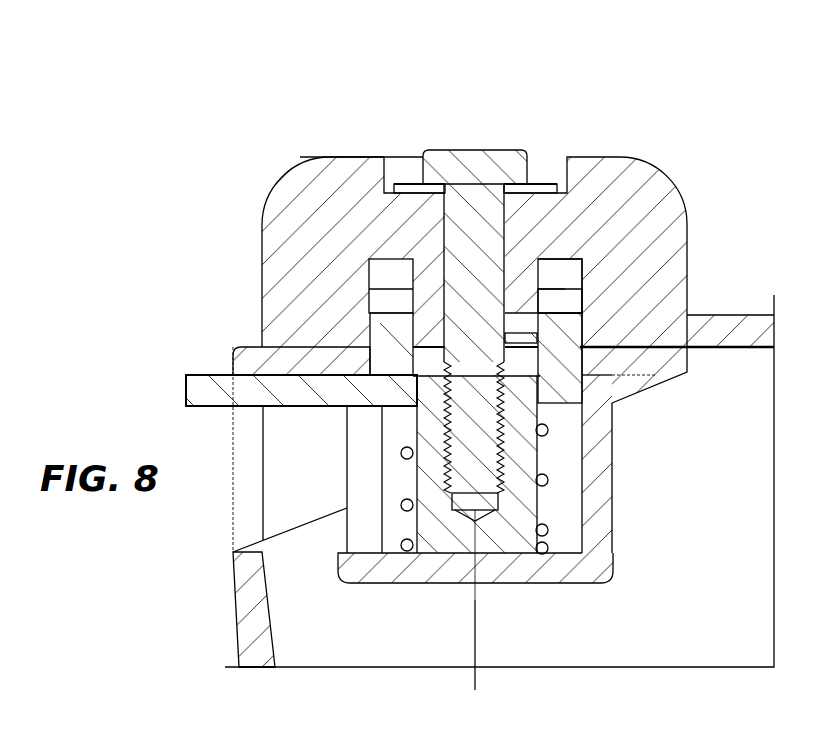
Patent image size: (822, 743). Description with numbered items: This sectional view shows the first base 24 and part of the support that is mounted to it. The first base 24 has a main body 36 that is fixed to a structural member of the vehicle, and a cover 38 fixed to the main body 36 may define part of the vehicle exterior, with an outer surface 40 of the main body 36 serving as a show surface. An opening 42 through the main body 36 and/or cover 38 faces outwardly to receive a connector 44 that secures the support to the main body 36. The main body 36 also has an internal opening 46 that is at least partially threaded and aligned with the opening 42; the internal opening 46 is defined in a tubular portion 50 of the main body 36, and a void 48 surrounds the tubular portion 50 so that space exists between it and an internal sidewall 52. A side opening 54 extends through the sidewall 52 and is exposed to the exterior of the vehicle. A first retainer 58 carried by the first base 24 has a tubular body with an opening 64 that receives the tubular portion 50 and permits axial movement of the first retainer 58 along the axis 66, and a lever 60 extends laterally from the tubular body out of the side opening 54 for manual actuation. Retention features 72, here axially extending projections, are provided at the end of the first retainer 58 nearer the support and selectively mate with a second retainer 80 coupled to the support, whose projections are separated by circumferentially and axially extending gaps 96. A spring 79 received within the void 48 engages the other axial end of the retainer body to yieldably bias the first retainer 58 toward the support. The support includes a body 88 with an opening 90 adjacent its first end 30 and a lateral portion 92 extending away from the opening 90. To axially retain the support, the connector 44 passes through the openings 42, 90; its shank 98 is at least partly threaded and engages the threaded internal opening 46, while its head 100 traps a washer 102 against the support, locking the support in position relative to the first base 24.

The first base 24 is at (672, 83).
The first end 30 is at (262, 265).
The main body 36 is at (260, 650).
The cover 38 is at (243, 362).
The outer surface 40 is at (237, 600).
The opening 42 is at (585, 367).
The connector 44 is at (505, 310).
The internal opening 46 is at (498, 453).
The void 48 is at (565, 510).
The tubular portion 50 is at (432, 512).
The internal sidewall 52 is at (568, 452).
The side opening 54 is at (266, 488).
The first retainer 58 is at (303, 428).
The lever 60 is at (197, 395).
The opening 64 is at (418, 343).
The axis 66 is at (472, 660).
The retention features 72 is at (562, 305).
The spring 79 is at (548, 536).
The second retainer 80 is at (538, 282).
The body 88 is at (330, 178).
The opening 90 is at (520, 332).
The lateral portion 92 is at (742, 335).
The gaps 96 is at (396, 275).
The shank 98 is at (488, 258).
The head 100 is at (519, 168).
The washer 102 is at (406, 192).